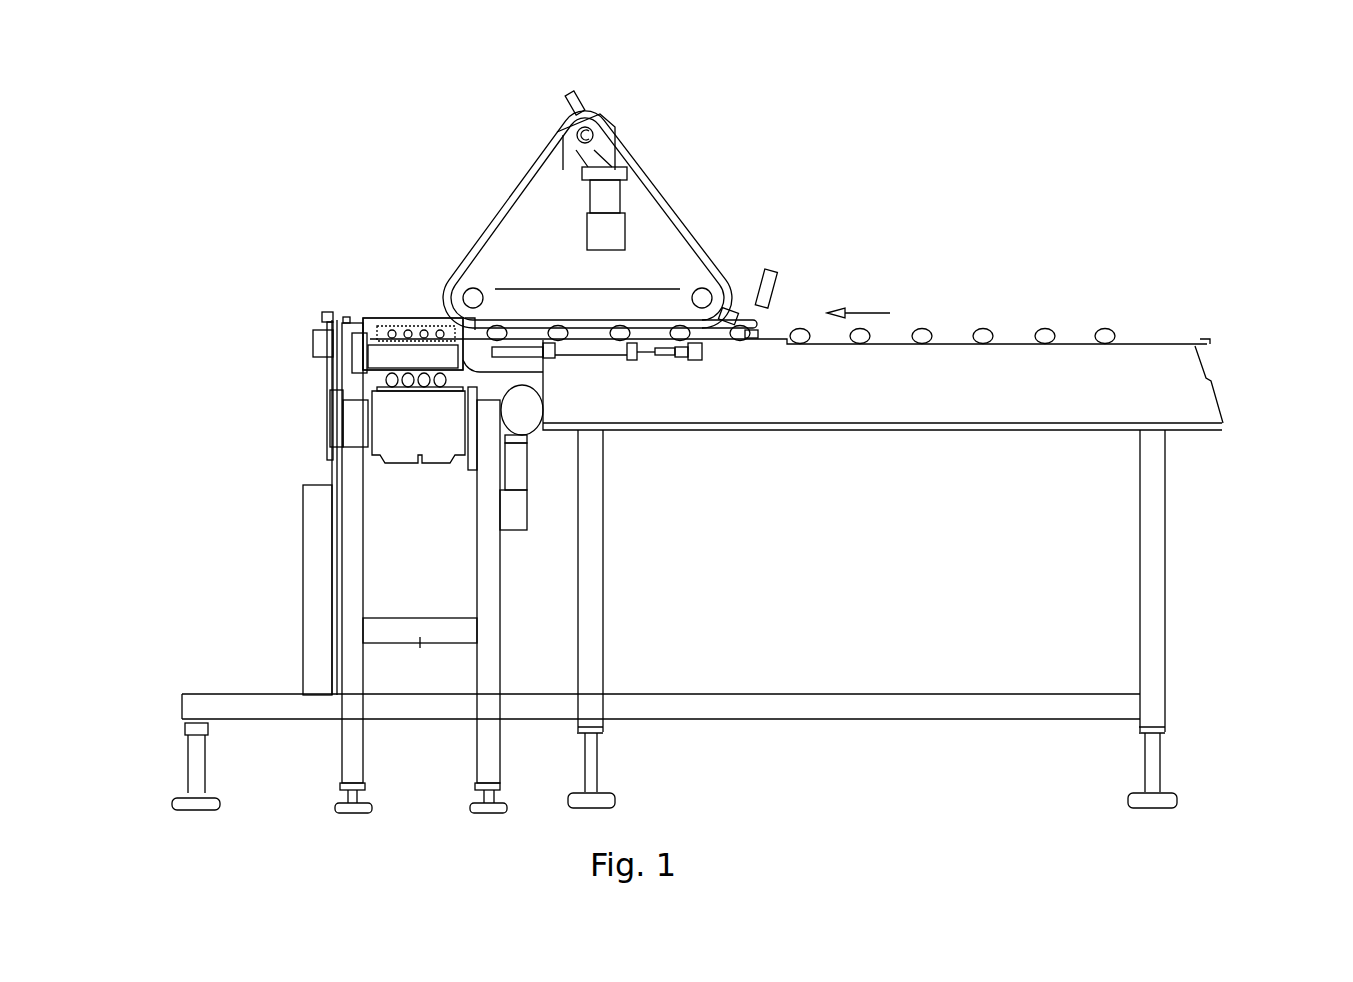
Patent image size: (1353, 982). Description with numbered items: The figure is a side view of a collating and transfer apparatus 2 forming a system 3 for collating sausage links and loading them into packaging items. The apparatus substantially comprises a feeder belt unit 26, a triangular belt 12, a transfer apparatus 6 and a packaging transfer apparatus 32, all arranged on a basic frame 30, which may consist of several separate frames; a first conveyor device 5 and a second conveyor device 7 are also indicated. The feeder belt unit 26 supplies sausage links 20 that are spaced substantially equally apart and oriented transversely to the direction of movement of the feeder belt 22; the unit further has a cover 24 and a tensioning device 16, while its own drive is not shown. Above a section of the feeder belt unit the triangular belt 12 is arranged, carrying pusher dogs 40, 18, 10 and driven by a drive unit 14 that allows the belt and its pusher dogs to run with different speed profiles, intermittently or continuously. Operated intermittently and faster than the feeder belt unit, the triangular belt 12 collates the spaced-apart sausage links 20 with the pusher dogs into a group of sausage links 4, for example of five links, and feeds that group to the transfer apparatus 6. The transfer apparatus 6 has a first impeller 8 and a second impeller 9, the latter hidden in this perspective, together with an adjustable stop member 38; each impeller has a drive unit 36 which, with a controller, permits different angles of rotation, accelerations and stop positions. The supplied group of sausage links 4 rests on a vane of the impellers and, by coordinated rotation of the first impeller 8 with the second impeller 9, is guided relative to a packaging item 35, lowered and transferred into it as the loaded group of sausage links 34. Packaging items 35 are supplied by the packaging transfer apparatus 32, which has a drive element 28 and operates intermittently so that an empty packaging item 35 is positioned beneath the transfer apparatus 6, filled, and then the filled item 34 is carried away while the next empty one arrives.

The collating and transfer apparatus 2 is at (982, 108).
The system for collating and loading sausage links into packaging items 3 is at (135, 140).
The group of sausage links 4 is at (398, 325).
The first conveyor device 5 is at (285, 326).
The transfer apparatus 6 is at (420, 330).
The second conveyor device 7 is at (413, 344).
The first impeller 8 is at (440, 325).
The second impeller 9 is at (413, 344).
The pusher dog 10 is at (405, 312).
The triangular belt 12 is at (643, 150).
The drive unit of the triangular belt 14 is at (607, 223).
The tensioning device 16 is at (587, 357).
The pusher dog 18 is at (733, 315).
The sausage link 20 is at (1107, 335).
The feeder belt 22 is at (1163, 340).
The cover 24 is at (1173, 380).
The feeder belt unit 26 is at (1222, 449).
The drive element 28 is at (513, 510).
The basic frame 30 is at (288, 620).
The packaging transfer apparatus 32 is at (427, 478).
The group of sausage links placed in packaging item 34 is at (387, 378).
The packaging item 35 is at (407, 392).
The impeller drive element 36 is at (302, 347).
The stop member 38 is at (372, 323).
The pusher dog 40 is at (575, 97).